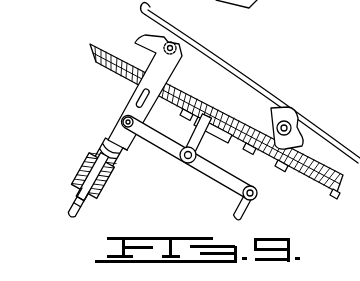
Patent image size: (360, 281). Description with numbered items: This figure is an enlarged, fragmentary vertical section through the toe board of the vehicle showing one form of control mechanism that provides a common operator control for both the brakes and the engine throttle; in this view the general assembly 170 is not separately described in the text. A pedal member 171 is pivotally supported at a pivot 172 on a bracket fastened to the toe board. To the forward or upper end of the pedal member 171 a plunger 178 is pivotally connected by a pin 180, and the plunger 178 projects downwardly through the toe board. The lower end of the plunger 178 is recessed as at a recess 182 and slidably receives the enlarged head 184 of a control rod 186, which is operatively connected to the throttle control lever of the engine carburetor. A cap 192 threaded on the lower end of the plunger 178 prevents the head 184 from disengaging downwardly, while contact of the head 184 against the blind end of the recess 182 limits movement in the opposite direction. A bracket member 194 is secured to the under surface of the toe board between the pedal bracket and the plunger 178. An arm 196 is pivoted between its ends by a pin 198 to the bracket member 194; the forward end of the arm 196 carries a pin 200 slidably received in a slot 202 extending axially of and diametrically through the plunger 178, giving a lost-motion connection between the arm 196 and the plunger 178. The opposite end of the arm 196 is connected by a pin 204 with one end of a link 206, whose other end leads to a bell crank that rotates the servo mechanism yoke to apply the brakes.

The rack 170 is at (310, 130).
The pedal member 171 is at (229, 65).
The pivot 172 is at (297, 117).
The plunger 178 is at (104, 129).
The pin 180 is at (164, 44).
The recess 182 is at (83, 167).
The enlarged head 184 is at (107, 168).
The control rod 186 is at (75, 213).
The cap 192 is at (100, 198).
The bracket member 194 is at (205, 117).
The arm 196 is at (231, 184).
The pin 198 is at (187, 164).
The pin 200 is at (122, 117).
The slot 202 is at (139, 96).
The pin 204 is at (253, 195).
The link 206 is at (244, 218).